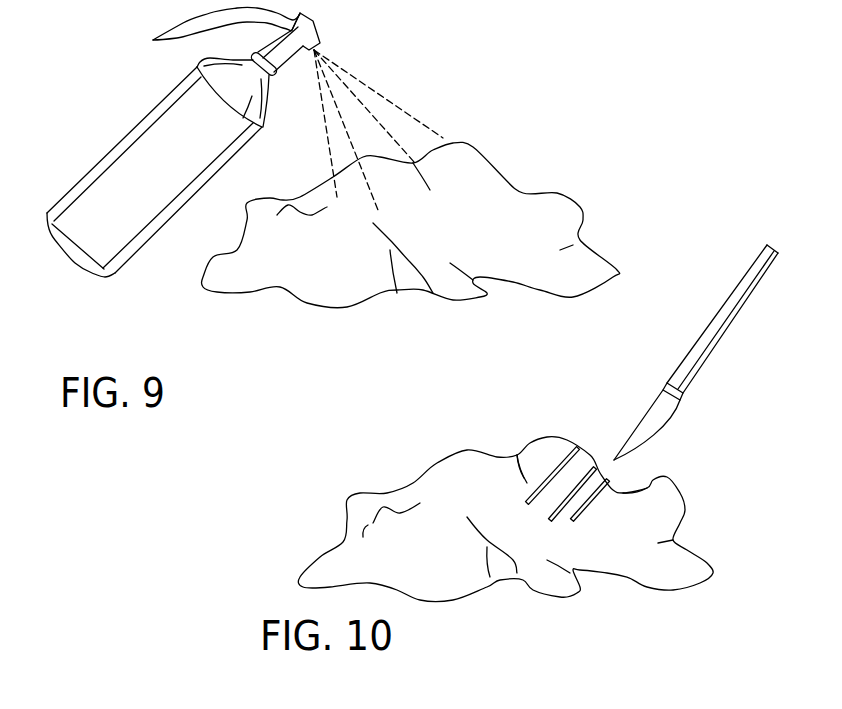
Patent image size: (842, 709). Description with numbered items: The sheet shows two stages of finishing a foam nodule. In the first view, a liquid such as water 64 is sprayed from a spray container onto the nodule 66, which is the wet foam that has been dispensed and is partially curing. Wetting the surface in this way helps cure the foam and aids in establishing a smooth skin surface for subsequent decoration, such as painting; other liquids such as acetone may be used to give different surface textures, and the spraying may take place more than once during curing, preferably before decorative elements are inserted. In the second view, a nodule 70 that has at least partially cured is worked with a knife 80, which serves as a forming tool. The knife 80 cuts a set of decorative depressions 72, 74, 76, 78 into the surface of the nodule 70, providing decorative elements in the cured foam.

In FIG. 9, the water 64 is at (123, 142).
In FIG. 9, the nodule 66 is at (522, 198).
In FIG. 10, the nodule 70 is at (340, 523).
In FIG. 10, the decorative depression 72 is at (517, 455).
In FIG. 10, the decorative depression 74 is at (568, 473).
In FIG. 10, the decorative depression 76 is at (590, 470).
In FIG. 10, the decorative depression 78 is at (643, 488).
In FIG. 10, the knife 80 is at (688, 357).